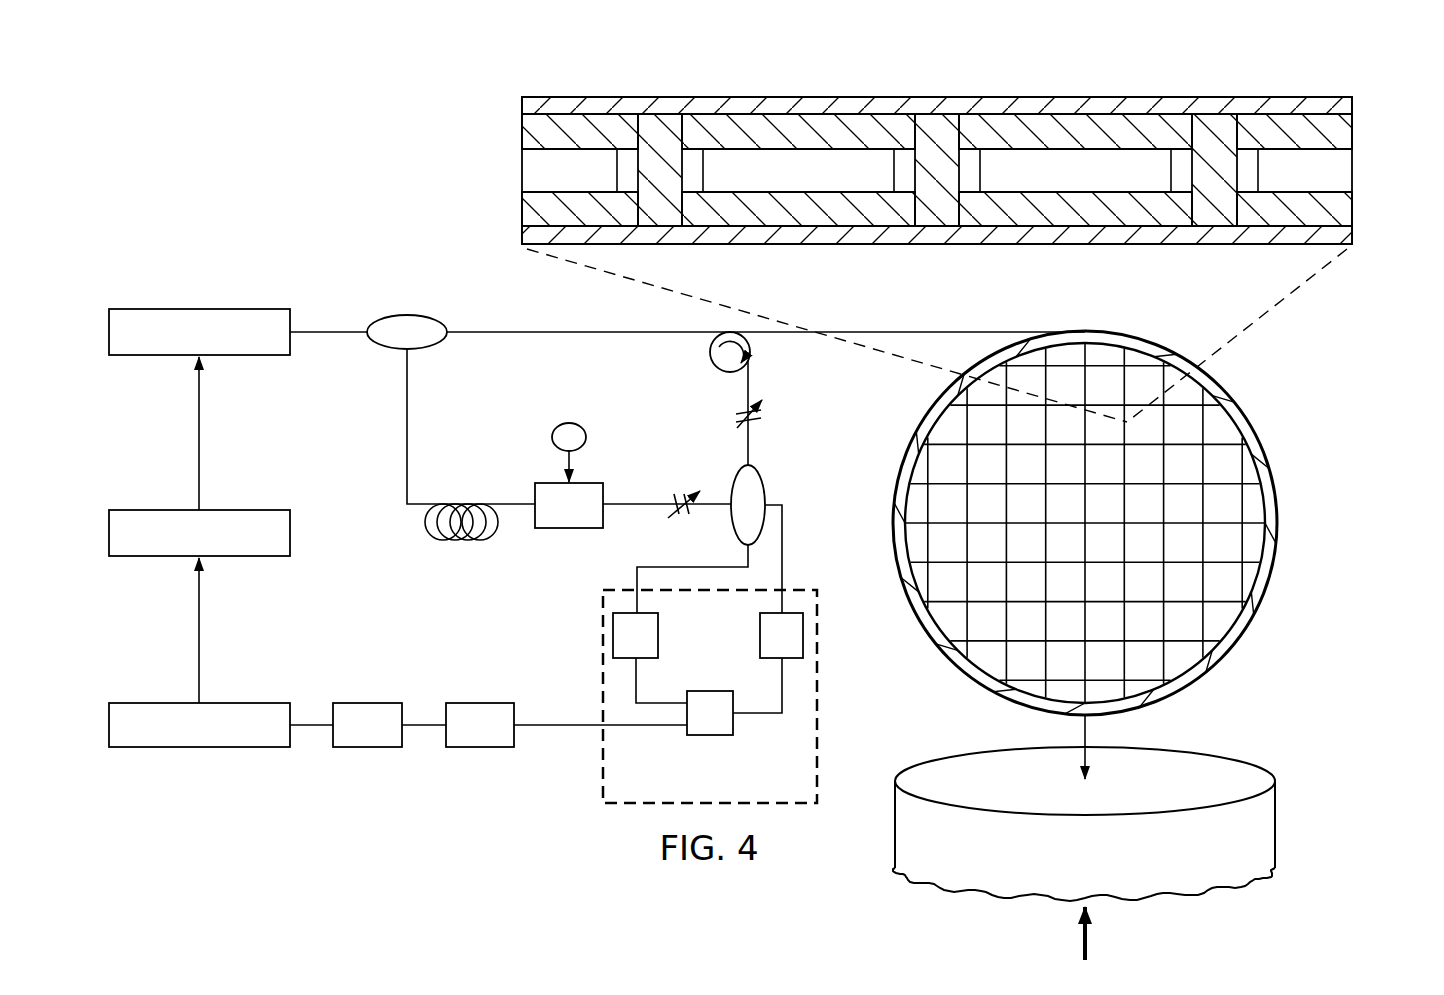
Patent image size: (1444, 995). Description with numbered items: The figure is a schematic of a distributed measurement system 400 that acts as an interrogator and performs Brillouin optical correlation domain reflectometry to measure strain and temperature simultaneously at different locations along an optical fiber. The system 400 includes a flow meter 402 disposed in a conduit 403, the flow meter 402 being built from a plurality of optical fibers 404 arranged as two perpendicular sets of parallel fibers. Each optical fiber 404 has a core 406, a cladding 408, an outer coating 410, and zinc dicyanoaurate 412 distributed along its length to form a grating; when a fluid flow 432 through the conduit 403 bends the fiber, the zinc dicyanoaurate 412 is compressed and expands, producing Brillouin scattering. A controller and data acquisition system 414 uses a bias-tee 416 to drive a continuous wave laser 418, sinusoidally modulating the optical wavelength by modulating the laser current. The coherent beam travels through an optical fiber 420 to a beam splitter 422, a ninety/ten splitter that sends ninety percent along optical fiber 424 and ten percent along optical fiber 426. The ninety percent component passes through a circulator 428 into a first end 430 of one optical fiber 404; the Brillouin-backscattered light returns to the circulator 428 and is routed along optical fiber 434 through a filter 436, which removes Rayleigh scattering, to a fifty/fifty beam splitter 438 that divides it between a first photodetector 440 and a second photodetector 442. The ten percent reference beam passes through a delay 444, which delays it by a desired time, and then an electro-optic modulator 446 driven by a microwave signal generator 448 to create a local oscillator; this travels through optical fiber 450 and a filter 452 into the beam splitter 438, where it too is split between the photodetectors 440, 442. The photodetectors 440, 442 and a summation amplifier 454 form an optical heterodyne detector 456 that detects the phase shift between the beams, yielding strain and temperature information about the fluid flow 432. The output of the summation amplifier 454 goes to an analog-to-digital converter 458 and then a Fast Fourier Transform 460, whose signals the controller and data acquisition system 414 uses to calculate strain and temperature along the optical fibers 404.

The distributed measurement system 400 is at (183, 104).
The flow meter 402 is at (1121, 523).
The conduit 403 is at (1278, 546).
The optical fiber 404 is at (1066, 97).
The core 406 is at (1345, 172).
The cladding 408 is at (1345, 133).
The outer coating 410 is at (1345, 232).
The zinc dicyanoaurate 412 is at (941, 120).
The controller and data acquisition system 414 is at (188, 748).
The bias-tee 416 is at (167, 509).
The continuous wave laser 418 is at (188, 308).
The optical fiber 420 is at (328, 331).
The beam splitter 422 is at (404, 315).
The optical fiber 424 is at (574, 331).
The optical fiber 426 is at (407, 428).
The circulator 428 is at (711, 347).
The first end 430 is at (1087, 330).
The fluid flow 432 is at (1277, 824).
The optical fiber 434 is at (748, 380).
The filter 436 is at (763, 416).
The beam splitter 438 is at (766, 500).
The first photodetector 440 is at (760, 647).
The second photodetector 442 is at (660, 623).
The delay 444 is at (463, 542).
The electro-optic modulator 446 is at (571, 529).
The microwave signal generator 448 is at (566, 422).
The optical fiber 450 is at (630, 507).
The filter 452 is at (681, 492).
The summation amplifier 454 is at (708, 737).
The optical heterodyne detector 456 is at (666, 696).
The analog-to-digital converter 458 is at (479, 748).
The Fast Fourier Transform 460 is at (367, 748).